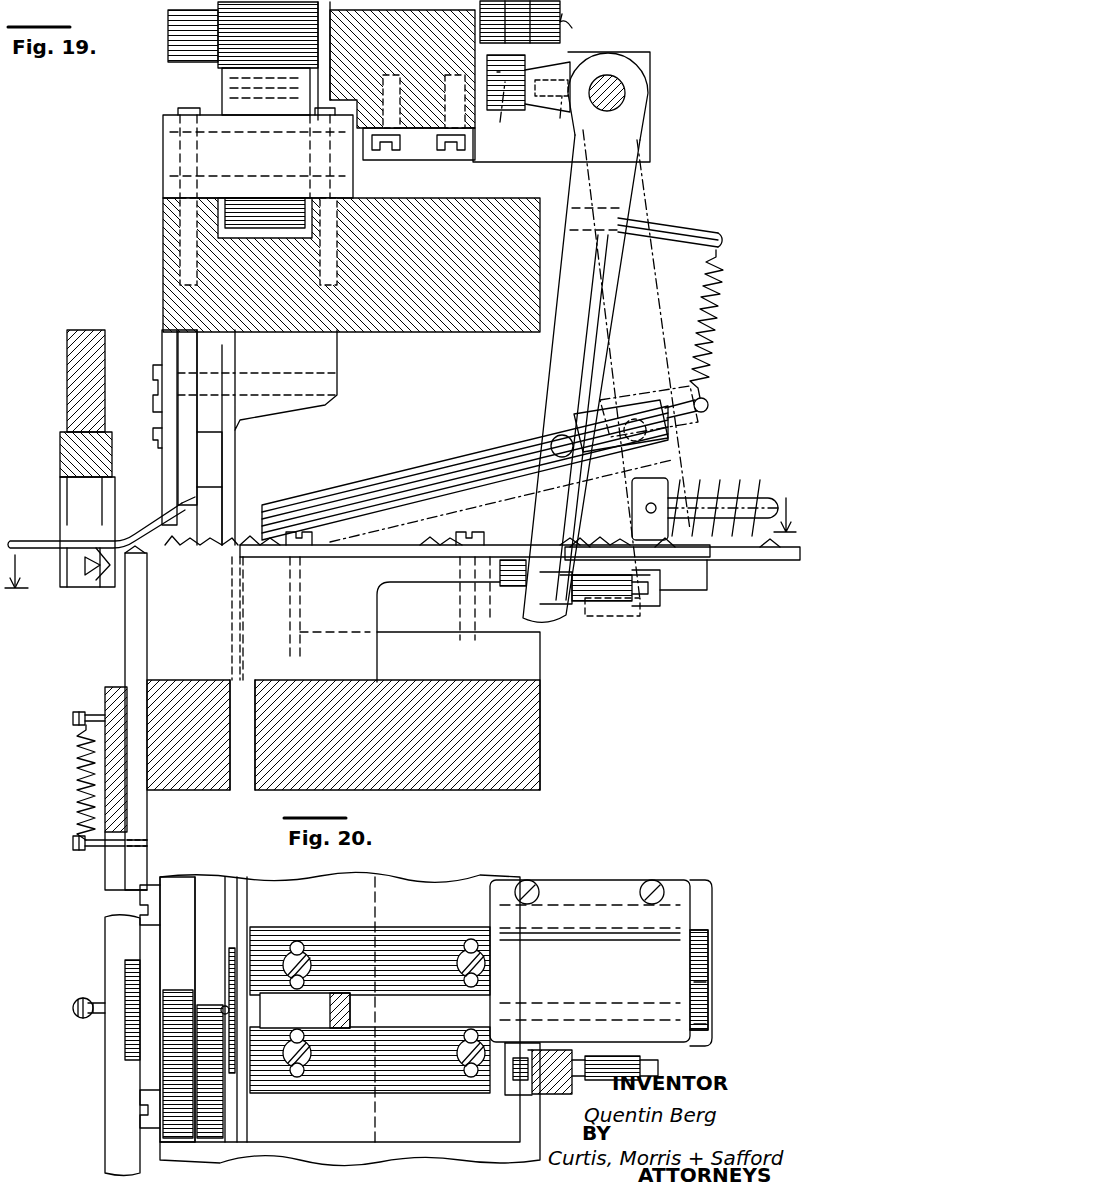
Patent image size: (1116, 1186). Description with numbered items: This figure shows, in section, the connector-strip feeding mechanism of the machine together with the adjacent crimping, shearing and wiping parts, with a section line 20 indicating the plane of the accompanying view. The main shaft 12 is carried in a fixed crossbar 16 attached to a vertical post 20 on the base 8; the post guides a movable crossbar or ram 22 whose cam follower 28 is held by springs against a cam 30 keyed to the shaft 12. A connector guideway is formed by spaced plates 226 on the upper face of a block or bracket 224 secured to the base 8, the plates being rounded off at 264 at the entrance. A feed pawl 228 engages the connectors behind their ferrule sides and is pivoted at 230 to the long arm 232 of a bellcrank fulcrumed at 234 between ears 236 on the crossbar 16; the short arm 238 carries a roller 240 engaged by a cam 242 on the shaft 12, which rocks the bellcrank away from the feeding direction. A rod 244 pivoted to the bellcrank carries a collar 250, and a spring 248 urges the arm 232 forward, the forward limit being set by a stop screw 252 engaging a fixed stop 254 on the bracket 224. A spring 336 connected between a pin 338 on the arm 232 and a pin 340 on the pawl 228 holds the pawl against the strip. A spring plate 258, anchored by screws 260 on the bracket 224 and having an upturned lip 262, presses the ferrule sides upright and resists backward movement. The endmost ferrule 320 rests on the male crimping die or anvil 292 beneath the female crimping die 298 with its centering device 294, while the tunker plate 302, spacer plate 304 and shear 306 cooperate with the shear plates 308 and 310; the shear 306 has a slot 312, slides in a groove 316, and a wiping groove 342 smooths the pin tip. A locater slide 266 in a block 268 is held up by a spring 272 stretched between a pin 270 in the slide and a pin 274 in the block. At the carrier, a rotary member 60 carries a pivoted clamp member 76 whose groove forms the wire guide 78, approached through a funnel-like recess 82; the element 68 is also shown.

In FIG. 19, the base 8 is at (510, 722).
In FIG. 20, the base 8 is at (460, 875).
In FIG. 19, the main shaft 12 is at (581, 25).
In FIG. 19, the crossbar 16 is at (423, 90).
In FIG. 19, the vertical post 20 is at (399, 543).
In FIG. 19, the movable crossbar or ram 22 is at (428, 222).
In FIG. 19, the cam follower 28 is at (250, 93).
In FIG. 19, the cam 30 is at (290, 38).
In FIG. 19, the rotary member 60 is at (86, 355).
In FIG. 19, the bearing block 68 is at (66, 440).
In FIG. 19, the pivoted clamp member 76 is at (76, 500).
In FIG. 19, the wire guide 78 is at (72, 576).
In FIG. 19, the funnel-like recess 82 is at (98, 576).
In FIG. 19, the block or bracket 224 is at (375, 612).
In FIG. 20, the block or bracket 224 is at (348, 1125).
In FIG. 19, the guideway plates 226 is at (408, 556).
In FIG. 20, the guideway plates 226 is at (408, 950).
In FIG. 19, the feed pawl 228 is at (398, 477).
In FIG. 20, the feed pawl 228 is at (340, 994).
In FIG. 19, the pivotal connection 230 is at (558, 438).
In FIG. 19, the long arm of bellcrank lever 232 is at (565, 350).
In FIG. 20, the long arm of bellcrank lever 232 is at (552, 1050).
In FIG. 19, the fulcrum 234 is at (628, 92).
In FIG. 19, the ears 236 is at (626, 58).
In FIG. 19, the short arm of bellcrank 238 is at (548, 105).
In FIG. 19, the roller 240 is at (510, 100).
In FIG. 19, the cam 242 is at (478, 24).
In FIG. 19, the rod 244 is at (746, 504).
In FIG. 19, the spring 248 is at (700, 490).
In FIG. 19, the collar 250 is at (648, 492).
In FIG. 19, the stop screw 252 is at (604, 602).
In FIG. 20, the stop screw 252 is at (608, 1055).
In FIG. 19, the fixed stop 254 is at (502, 570).
In FIG. 20, the fixed stop 254 is at (510, 1082).
In FIG. 19, the spring plate 258 is at (603, 548).
In FIG. 20, the spring plate 258 is at (572, 945).
In FIG. 20, the screws 260 is at (652, 882).
In FIG. 19, the upturned lip 262 is at (678, 582).
In FIG. 20, the upturned lip 262 is at (714, 1006).
In FIG. 20, the rounded-off portion 264 is at (712, 1010).
In FIG. 19, the locater slide 266 is at (136, 604).
In FIG. 20, the locater slide 266 is at (130, 976).
In FIG. 19, the block 268 is at (117, 688).
In FIG. 20, the block 268 is at (118, 933).
In FIG. 19, the pin 270 is at (73, 845).
In FIG. 19, the spring 272 is at (78, 770).
In FIG. 20, the spring 272 is at (76, 1006).
In FIG. 19, the pin 274 is at (75, 716).
In FIG. 20, the pin 274 is at (74, 1014).
In FIG. 19, the male crimping die or anvil 292 is at (180, 662).
In FIG. 20, the male crimping die or anvil 292 is at (180, 880).
In FIG. 19, the centering device 294 is at (160, 420).
In FIG. 19, the female crimping die 298 is at (188, 340).
In FIG. 19, the tunker plate 302 is at (210, 345).
In FIG. 19, the spacer plate 304 is at (208, 662).
In FIG. 20, the spacer plate 304 is at (214, 880).
In FIG. 19, the shear 306 is at (234, 345).
In FIG. 20, the shear 306 is at (252, 1048).
In FIG. 19, the shear plate 308 is at (236, 604).
In FIG. 20, the shear plate 308 is at (231, 1130).
In FIG. 19, the shear plate 310 is at (245, 655).
In FIG. 20, the shear plate 310 is at (246, 1124).
In FIG. 20, the slot 312 is at (260, 1010).
In FIG. 20, the groove 316 is at (232, 956).
In FIG. 19, the ferrule part 320 is at (186, 544).
In FIG. 19, the spring 336 is at (718, 312).
In FIG. 19, the pin 338 is at (662, 226).
In FIG. 19, the pin 340 is at (706, 400).
In FIG. 20, the wiping groove 342 is at (222, 1006).